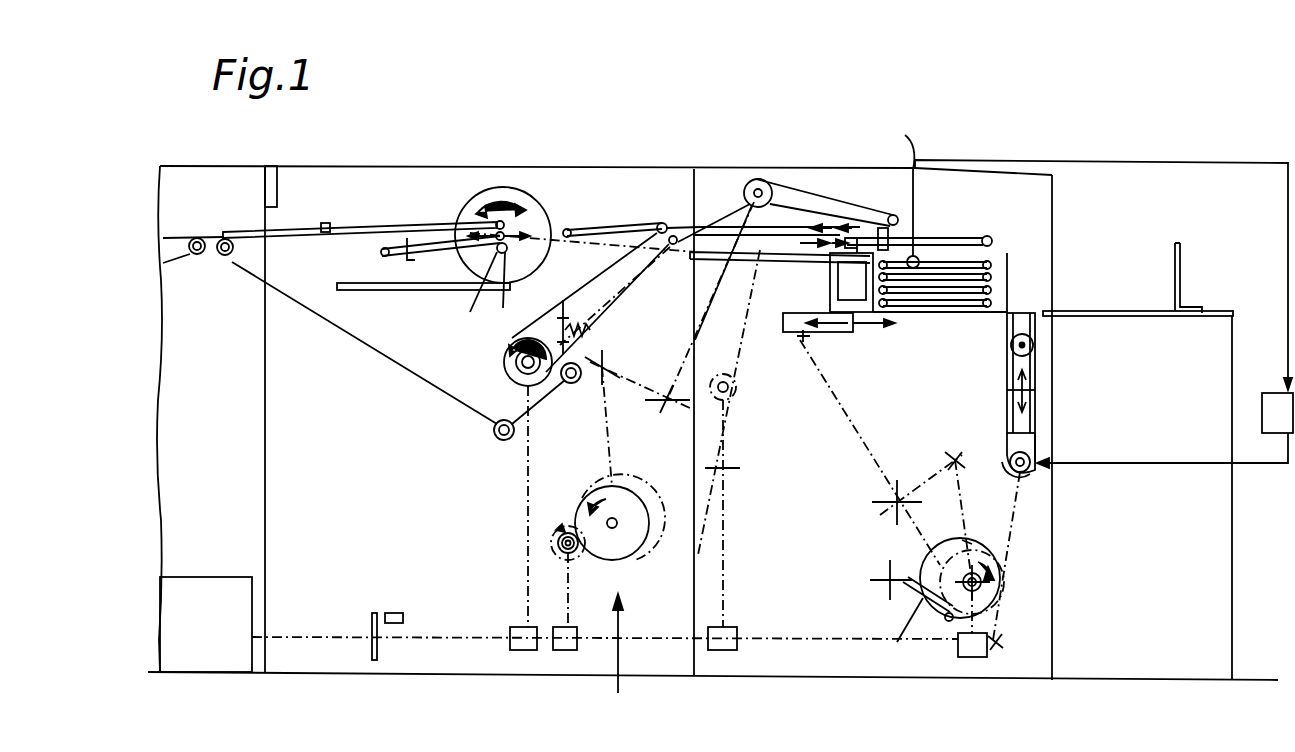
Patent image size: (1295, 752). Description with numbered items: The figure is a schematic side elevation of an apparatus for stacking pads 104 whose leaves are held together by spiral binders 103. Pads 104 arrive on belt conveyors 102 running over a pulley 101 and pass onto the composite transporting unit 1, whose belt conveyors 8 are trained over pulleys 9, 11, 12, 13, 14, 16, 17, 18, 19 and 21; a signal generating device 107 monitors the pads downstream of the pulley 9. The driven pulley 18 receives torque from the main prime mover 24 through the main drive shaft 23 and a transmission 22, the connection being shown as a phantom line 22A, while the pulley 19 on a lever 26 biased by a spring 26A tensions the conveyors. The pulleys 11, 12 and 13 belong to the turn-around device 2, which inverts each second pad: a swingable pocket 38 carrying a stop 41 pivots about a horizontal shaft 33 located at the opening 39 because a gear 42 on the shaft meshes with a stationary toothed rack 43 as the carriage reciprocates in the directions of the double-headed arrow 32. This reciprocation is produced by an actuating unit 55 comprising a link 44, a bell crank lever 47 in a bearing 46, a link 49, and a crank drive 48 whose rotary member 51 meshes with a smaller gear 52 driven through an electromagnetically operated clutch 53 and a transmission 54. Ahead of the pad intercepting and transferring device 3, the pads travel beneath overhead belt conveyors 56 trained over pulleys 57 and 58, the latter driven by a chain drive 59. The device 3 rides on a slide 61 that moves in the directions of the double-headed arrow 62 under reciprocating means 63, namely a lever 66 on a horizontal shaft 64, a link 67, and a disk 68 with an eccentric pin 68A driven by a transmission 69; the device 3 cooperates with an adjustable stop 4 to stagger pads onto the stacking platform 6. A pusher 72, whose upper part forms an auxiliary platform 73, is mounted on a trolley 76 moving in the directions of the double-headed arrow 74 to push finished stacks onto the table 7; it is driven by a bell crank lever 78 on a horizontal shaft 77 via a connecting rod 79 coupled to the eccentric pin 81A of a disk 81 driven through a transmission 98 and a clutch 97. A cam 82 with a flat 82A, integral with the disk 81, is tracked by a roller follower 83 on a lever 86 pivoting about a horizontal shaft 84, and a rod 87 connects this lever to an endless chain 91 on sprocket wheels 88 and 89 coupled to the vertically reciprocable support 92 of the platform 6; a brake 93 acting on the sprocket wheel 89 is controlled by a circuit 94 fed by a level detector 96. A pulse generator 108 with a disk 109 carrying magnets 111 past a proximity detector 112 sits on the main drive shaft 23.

The composite transporting unit 1 is at (684, 138).
The turn-around device 2 is at (532, 166).
The pad intercepting and transferring device 3 is at (995, 244).
The adjustable stop 4 is at (870, 240).
The stacking platform 6 is at (950, 312).
The table 7 is at (1110, 311).
The belt conveyors 8 is at (375, 230).
The pulley 9 is at (220, 258).
The pulley 11 is at (508, 222).
The pulley 12 is at (380, 252).
The pulley 13 is at (512, 252).
The pulley 14 is at (664, 222).
The pulley 16 is at (884, 228).
The pulley 17 is at (674, 246).
The driven pulley 18 is at (504, 372).
The pulley 19 is at (574, 383).
The pulley 21 is at (503, 440).
The transmission 22 is at (524, 650).
The phantom line 22A is at (530, 476).
The main drive shaft 23 is at (478, 648).
The main prime mover 24 is at (206, 624).
The lever 26 is at (592, 332).
The spring 26A is at (575, 325).
The double-headed arrow 32 is at (474, 294).
The horizontal shaft 33 is at (499, 289).
The swingable pocket 38 is at (440, 222).
The opening 39 is at (532, 228).
The stop 41 is at (423, 257).
The gear 42 is at (490, 187).
The stationary toothed rack 43 is at (427, 290).
The link 44 is at (615, 242).
The bearing 46 is at (663, 412).
The bell crank lever 47 is at (690, 362).
The crank drive 48 is at (640, 496).
The link 49 is at (609, 440).
The rotary member 51 is at (635, 542).
The smaller gear 52 is at (548, 538).
The electromagnetically operated clutch 53 is at (556, 546).
The transmission 54 is at (565, 650).
The actuating unit 55 is at (619, 657).
The overhead belt conveyors 56 is at (826, 196).
The pulley 57 is at (760, 187).
The pulley 58 is at (901, 186).
The chain drive 59 is at (733, 210).
The slide 61 is at (835, 262).
The double-headed arrow 62 is at (780, 259).
The reciprocating means 63 is at (754, 428).
The horizontal shaft 64 is at (717, 513).
The lever 66 is at (760, 345).
The link 67 is at (830, 246).
The disk 68 is at (730, 372).
The eccentric pin 68A is at (740, 392).
The transmission 69 is at (722, 650).
The pusher 72 is at (862, 332).
The auxiliary platform 73 is at (740, 280).
The double-headed arrow 74 is at (845, 335).
The trolley 76 is at (832, 332).
The horizontal shaft 77 is at (888, 512).
The bell crank lever 78 is at (930, 466).
The connecting rod 79 is at (963, 516).
The disk 81 is at (948, 548).
The eccentric pin 81A is at (988, 531).
The cam 82 is at (927, 572).
The flat 82A is at (895, 658).
The roller follower 83 is at (944, 618).
The horizontal shaft 84 is at (882, 590).
The lever 86 is at (908, 598).
The rod 87 is at (1010, 553).
The sprocket wheel 88 is at (1034, 355).
The sprocket wheel 89 is at (1035, 453).
The endless chain 91 is at (1007, 445).
The vertically reciprocable support 92 is at (1007, 410).
The brake 93 is at (1030, 470).
The circuit 94 is at (1165, 430).
The level detector 96 is at (920, 258).
The clutch 97 is at (985, 590).
The transmission 98 is at (975, 657).
The pulley 101 is at (222, 239).
The belt conveyors 102 is at (186, 240).
The binders 103 is at (992, 303).
The pads 104 is at (290, 232).
The signal generating device 107 is at (280, 182).
The pulse generator 108 is at (366, 598).
The disk 109 is at (372, 627).
The magnets 111 is at (380, 614).
The proximity detector 112 is at (400, 614).